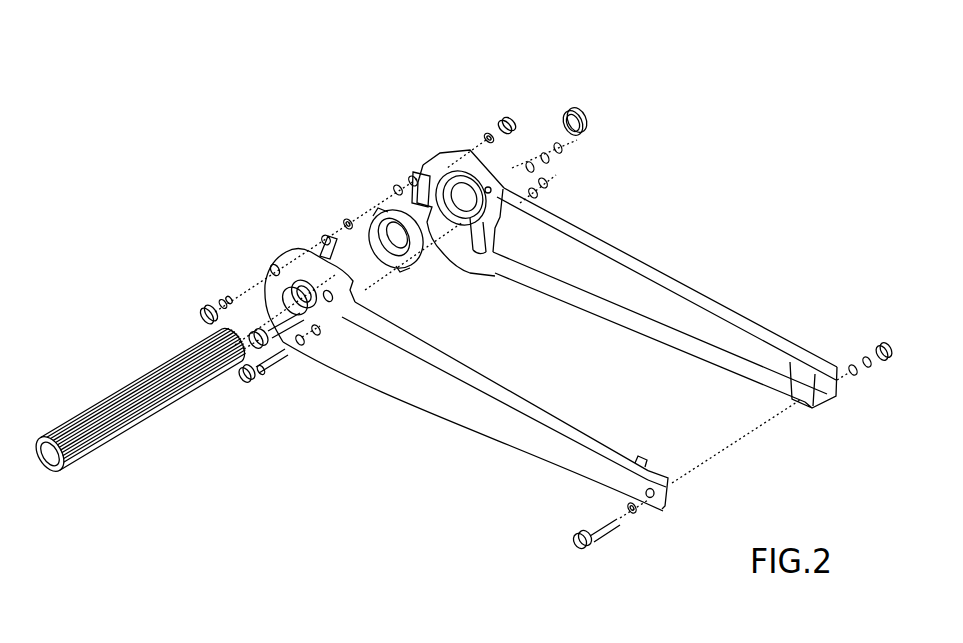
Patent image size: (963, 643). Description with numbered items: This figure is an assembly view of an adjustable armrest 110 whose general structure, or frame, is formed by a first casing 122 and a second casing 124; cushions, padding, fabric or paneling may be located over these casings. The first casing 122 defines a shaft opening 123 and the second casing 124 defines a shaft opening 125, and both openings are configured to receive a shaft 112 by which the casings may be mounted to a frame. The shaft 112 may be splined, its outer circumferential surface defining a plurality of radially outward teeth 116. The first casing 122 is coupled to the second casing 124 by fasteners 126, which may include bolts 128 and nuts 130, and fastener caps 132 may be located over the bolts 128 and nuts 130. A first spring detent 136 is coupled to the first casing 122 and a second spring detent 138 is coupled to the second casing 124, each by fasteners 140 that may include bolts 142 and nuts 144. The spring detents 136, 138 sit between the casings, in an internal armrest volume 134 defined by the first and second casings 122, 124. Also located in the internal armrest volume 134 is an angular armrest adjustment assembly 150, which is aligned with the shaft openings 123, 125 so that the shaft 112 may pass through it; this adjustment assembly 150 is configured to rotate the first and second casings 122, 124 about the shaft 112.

The armrest 110 is at (211, 161).
The shaft 112 is at (88, 396).
The teeth 116 is at (100, 440).
The first casing 122 is at (477, 422).
The shaft opening 123 is at (290, 253).
The second casing 124 is at (686, 268).
The shaft opening 125 is at (458, 168).
The fasteners 126 is at (292, 380).
The bolts 128 is at (285, 362).
The nuts 130 is at (560, 160).
The fastener caps 132 is at (200, 315).
The internal armrest volume 134 is at (505, 226).
The first spring detent 136 is at (320, 236).
The second spring detent 138 is at (415, 172).
The fasteners 140 is at (200, 284).
The bolts 142 is at (221, 298).
The nuts 144 is at (348, 215).
The angular armrest adjustment assembly 150 is at (428, 265).